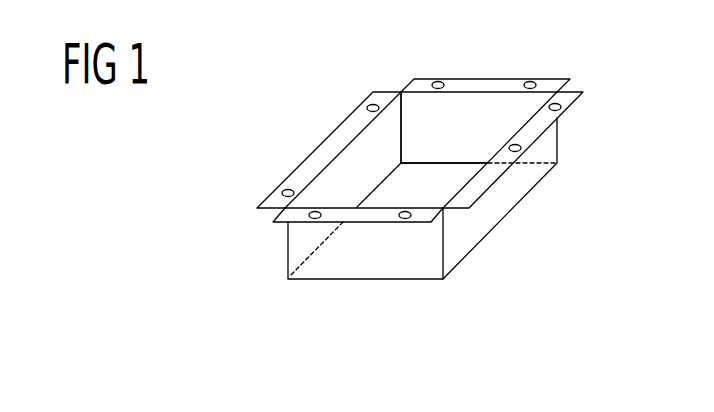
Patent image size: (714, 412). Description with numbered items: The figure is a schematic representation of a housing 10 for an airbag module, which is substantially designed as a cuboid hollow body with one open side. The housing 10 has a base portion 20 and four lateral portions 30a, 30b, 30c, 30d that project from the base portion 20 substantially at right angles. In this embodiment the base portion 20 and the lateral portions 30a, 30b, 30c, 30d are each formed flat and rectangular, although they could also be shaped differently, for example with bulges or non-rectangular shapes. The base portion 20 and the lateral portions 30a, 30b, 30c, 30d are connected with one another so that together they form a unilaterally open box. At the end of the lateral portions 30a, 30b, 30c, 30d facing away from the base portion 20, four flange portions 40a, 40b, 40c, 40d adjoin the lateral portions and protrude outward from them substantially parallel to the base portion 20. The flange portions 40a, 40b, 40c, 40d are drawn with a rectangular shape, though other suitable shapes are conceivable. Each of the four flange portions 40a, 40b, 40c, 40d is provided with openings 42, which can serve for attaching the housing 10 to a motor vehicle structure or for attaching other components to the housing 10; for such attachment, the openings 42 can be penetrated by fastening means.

The housing 10 is at (427, 177).
The base portion 20 is at (434, 194).
The lateral portion 30a is at (337, 173).
The lateral portion 30b is at (462, 104).
The lateral portion 30c is at (478, 222).
The lateral portion 30d is at (365, 267).
The flange portion 40a is at (348, 128).
The flange portion 40b is at (506, 84).
The flange portion 40c is at (538, 127).
The flange portion 40d is at (313, 223).
The openings 42 is at (436, 80).